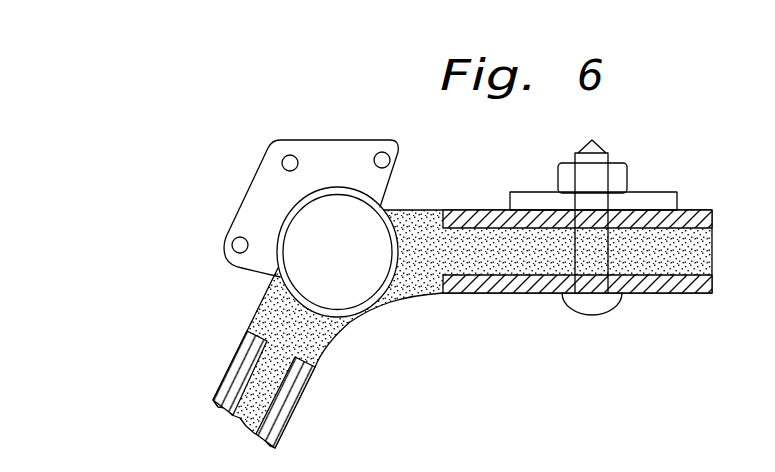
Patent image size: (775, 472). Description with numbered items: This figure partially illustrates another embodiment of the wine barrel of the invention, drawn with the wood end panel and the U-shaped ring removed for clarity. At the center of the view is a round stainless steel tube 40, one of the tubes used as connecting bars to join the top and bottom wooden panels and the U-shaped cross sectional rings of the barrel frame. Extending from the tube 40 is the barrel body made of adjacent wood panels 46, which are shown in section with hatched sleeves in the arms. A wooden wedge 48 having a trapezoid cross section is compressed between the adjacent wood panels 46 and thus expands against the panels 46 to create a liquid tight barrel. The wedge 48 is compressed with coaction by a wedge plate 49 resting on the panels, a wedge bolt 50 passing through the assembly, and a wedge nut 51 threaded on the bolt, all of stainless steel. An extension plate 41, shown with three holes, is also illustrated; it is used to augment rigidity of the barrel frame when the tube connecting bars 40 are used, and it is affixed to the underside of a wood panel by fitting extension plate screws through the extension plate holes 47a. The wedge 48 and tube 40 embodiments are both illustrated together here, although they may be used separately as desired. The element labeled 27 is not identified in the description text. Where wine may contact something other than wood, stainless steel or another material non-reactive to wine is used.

The support arm 27 is at (415, 212).
The round stainless steel tube 40 is at (328, 187).
The extension plate 41 is at (355, 143).
The wood panel 46 is at (462, 210).
The extension plate hole 47a is at (288, 158).
The wooden wedge 48 is at (547, 253).
The wedge plate 49 is at (647, 198).
The wedge bolt 50 is at (603, 150).
The wedge nut 51 is at (622, 167).